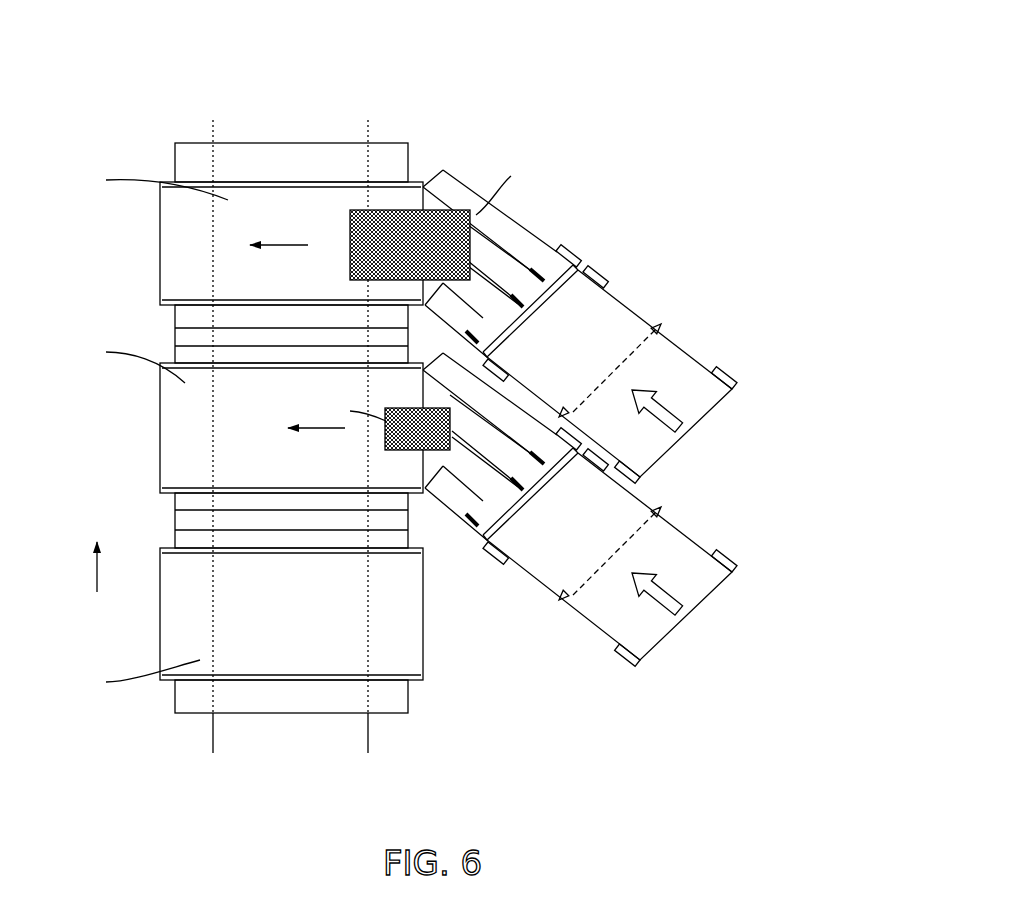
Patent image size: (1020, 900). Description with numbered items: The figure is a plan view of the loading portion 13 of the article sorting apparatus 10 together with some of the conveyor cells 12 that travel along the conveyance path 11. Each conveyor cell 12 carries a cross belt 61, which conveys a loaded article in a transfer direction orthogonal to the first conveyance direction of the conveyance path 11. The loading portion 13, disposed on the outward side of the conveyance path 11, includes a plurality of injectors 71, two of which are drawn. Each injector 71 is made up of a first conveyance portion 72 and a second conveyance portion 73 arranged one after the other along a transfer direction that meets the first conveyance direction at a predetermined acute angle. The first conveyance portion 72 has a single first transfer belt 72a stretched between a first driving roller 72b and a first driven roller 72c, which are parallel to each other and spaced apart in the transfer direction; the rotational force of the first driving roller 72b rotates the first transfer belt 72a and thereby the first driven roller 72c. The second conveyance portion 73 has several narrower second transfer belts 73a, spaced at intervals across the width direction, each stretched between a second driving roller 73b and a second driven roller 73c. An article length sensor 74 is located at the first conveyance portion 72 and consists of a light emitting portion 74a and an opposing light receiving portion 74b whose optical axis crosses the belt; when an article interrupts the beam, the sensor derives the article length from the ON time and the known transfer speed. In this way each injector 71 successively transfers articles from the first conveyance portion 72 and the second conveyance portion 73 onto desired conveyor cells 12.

The article sorting apparatus 10 is at (483, 80).
The conveyance path 11 is at (208, 737).
The conveyor cell 12 is at (172, 149).
The loading portion 13 is at (668, 172).
The cross belt 61 is at (170, 205).
The injector 71 is at (654, 452).
The first conveyance portion 72 is at (654, 452).
The first transfer belt 72a is at (623, 316).
The first driving roller 72b is at (740, 378).
The first driven roller 72c is at (606, 275).
The second conveyance portion 73 is at (531, 367).
The second transfer belt 73a is at (470, 200).
The second driving roller 73b is at (578, 265).
The second driven roller 73c is at (453, 170).
The article length sensor 74 is at (697, 468).
The light emitting portion 74a is at (663, 324).
The light receiving portion 74b is at (569, 410).